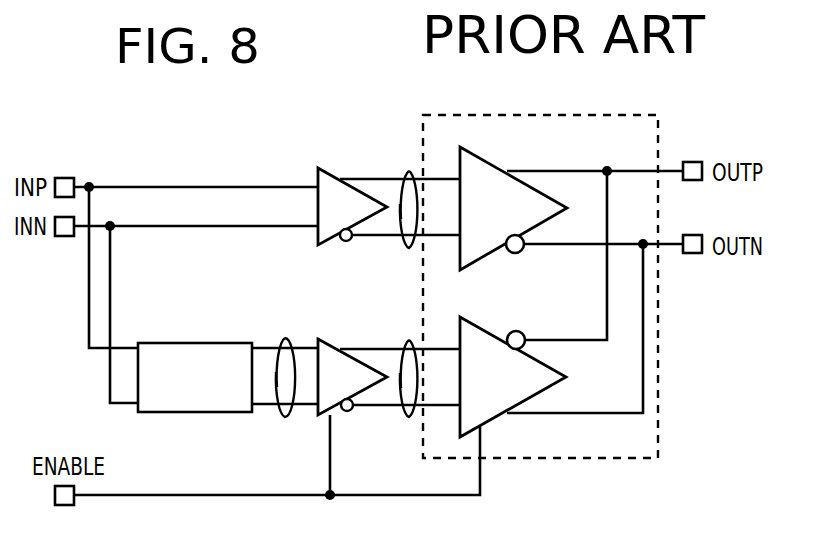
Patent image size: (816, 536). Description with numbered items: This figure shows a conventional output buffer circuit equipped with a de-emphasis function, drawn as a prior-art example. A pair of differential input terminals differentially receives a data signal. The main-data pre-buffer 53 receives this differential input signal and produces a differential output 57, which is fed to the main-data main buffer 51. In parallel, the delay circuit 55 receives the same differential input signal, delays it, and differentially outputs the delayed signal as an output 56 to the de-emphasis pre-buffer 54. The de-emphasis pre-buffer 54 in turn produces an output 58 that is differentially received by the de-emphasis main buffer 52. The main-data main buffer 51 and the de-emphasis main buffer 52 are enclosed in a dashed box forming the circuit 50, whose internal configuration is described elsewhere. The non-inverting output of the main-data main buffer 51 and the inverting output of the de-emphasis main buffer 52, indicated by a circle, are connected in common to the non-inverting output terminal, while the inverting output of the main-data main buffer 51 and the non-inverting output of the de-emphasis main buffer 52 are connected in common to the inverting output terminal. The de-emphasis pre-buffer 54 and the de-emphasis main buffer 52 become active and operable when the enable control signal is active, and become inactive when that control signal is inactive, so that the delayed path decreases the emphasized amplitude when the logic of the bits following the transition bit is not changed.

The circuit 50 is at (660, 120).
The main-data main buffer 51 is at (490, 160).
The de-emphasis main buffer 52 is at (495, 329).
The main-data pre-buffer 53 is at (325, 170).
The de-emphasis pre-buffer 54 is at (325, 341).
The delay circuit 55 is at (190, 343).
The output from the delay circuit 56 is at (285, 338).
The differential output from the main-data pre-buffer 57 is at (409, 171).
The output from the de-emphasis pre-buffer 58 is at (407, 417).